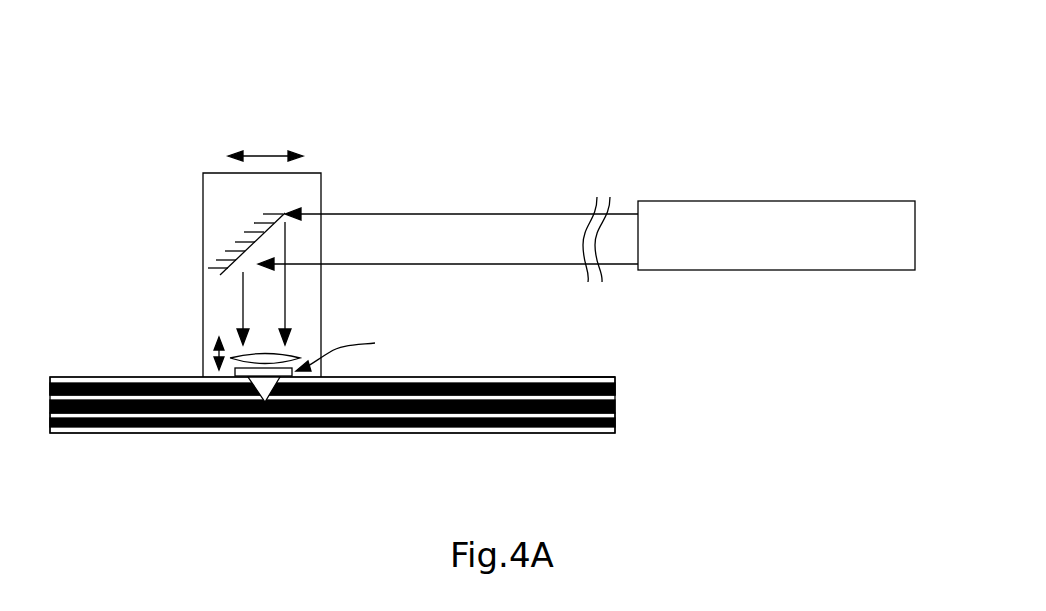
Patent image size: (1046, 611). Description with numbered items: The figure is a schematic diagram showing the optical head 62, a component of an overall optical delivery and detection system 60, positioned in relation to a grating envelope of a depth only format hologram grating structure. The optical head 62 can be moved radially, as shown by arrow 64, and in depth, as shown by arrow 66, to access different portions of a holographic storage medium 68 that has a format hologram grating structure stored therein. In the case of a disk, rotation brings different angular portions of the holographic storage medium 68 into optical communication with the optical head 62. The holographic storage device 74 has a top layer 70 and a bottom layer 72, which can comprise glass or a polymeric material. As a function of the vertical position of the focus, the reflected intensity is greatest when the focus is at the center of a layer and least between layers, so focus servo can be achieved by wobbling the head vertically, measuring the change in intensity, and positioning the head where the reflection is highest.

The optical delivery and detection system 60 is at (627, 128).
The optical head 62 is at (303, 188).
The arrow 64 is at (265, 152).
The arrow 66 is at (212, 352).
The holographic storage medium 68 is at (615, 398).
The top layer 70 is at (525, 378).
The bottom layer 72 is at (533, 433).
The holographic storage device 74 is at (606, 357).